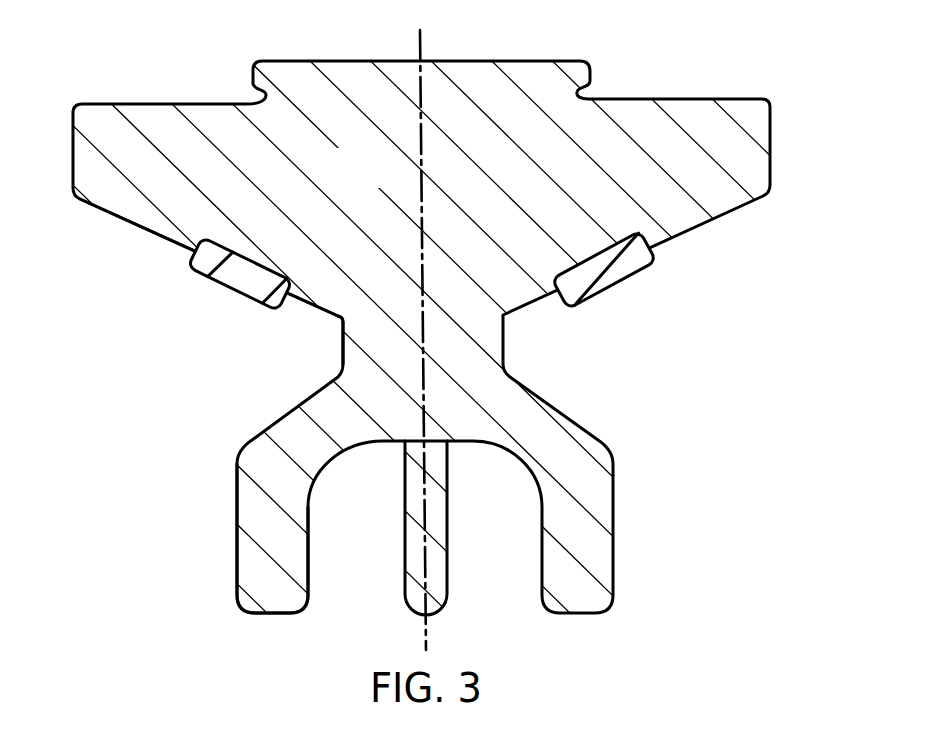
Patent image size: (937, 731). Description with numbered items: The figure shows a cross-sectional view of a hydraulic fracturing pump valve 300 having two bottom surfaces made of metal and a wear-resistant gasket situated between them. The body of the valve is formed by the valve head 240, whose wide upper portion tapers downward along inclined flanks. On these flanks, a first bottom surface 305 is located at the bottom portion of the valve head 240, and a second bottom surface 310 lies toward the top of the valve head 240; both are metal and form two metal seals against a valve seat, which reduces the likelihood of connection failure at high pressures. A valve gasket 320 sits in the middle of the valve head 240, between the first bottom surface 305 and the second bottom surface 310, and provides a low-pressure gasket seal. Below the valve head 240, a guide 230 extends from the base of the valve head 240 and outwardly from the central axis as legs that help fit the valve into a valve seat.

The pump valve 300 is at (664, 57).
The valve head 240 is at (383, 182).
The second bottom surface 310 is at (135, 226).
The valve gasket 320 is at (223, 280).
The first bottom surface 305 is at (328, 317).
The guide 230 is at (244, 500).